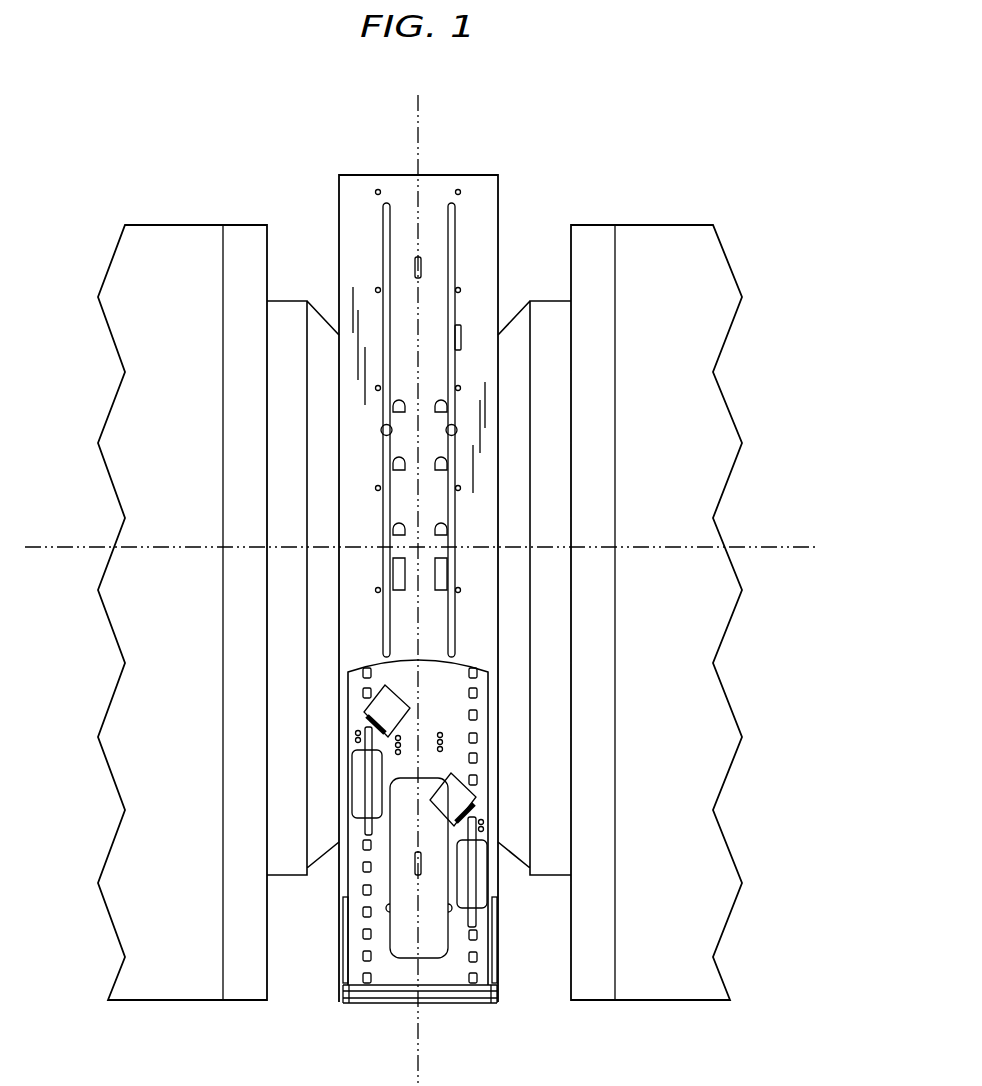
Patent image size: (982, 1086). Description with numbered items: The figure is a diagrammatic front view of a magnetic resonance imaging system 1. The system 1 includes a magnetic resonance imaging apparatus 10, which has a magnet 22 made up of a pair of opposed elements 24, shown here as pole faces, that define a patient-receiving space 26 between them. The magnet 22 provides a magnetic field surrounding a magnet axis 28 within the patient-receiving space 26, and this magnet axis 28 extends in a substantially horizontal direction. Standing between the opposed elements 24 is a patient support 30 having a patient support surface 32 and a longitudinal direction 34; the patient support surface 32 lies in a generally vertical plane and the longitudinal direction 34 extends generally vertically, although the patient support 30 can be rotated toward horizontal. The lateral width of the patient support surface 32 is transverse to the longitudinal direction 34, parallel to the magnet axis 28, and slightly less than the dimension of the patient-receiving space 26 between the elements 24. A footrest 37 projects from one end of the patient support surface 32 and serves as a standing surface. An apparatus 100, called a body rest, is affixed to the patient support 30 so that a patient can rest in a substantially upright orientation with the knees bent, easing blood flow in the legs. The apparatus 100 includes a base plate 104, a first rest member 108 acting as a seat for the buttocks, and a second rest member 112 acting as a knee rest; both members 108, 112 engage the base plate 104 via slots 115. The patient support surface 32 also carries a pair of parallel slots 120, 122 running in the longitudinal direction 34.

The magnetic resonance imaging system 1 is at (657, 121).
The magnetic resonance imaging apparatus 10 is at (220, 193).
The magnet 22 is at (693, 423).
The opposed elements 24 is at (316, 322).
The patient-receiving space 26 is at (327, 193).
The magnet axis 28 is at (802, 547).
The patient support 30 is at (500, 213).
The patient support surface 32 is at (430, 365).
The longitudinal direction 34 is at (418, 125).
The footrest 37 is at (363, 995).
The apparatus 100 is at (337, 928).
The base plate 104 is at (468, 724).
The first rest member 108 is at (385, 712).
The second rest member 112 is at (480, 795).
The slots 115 is at (480, 704).
The slot 120 is at (383, 258).
The slot 122 is at (455, 258).